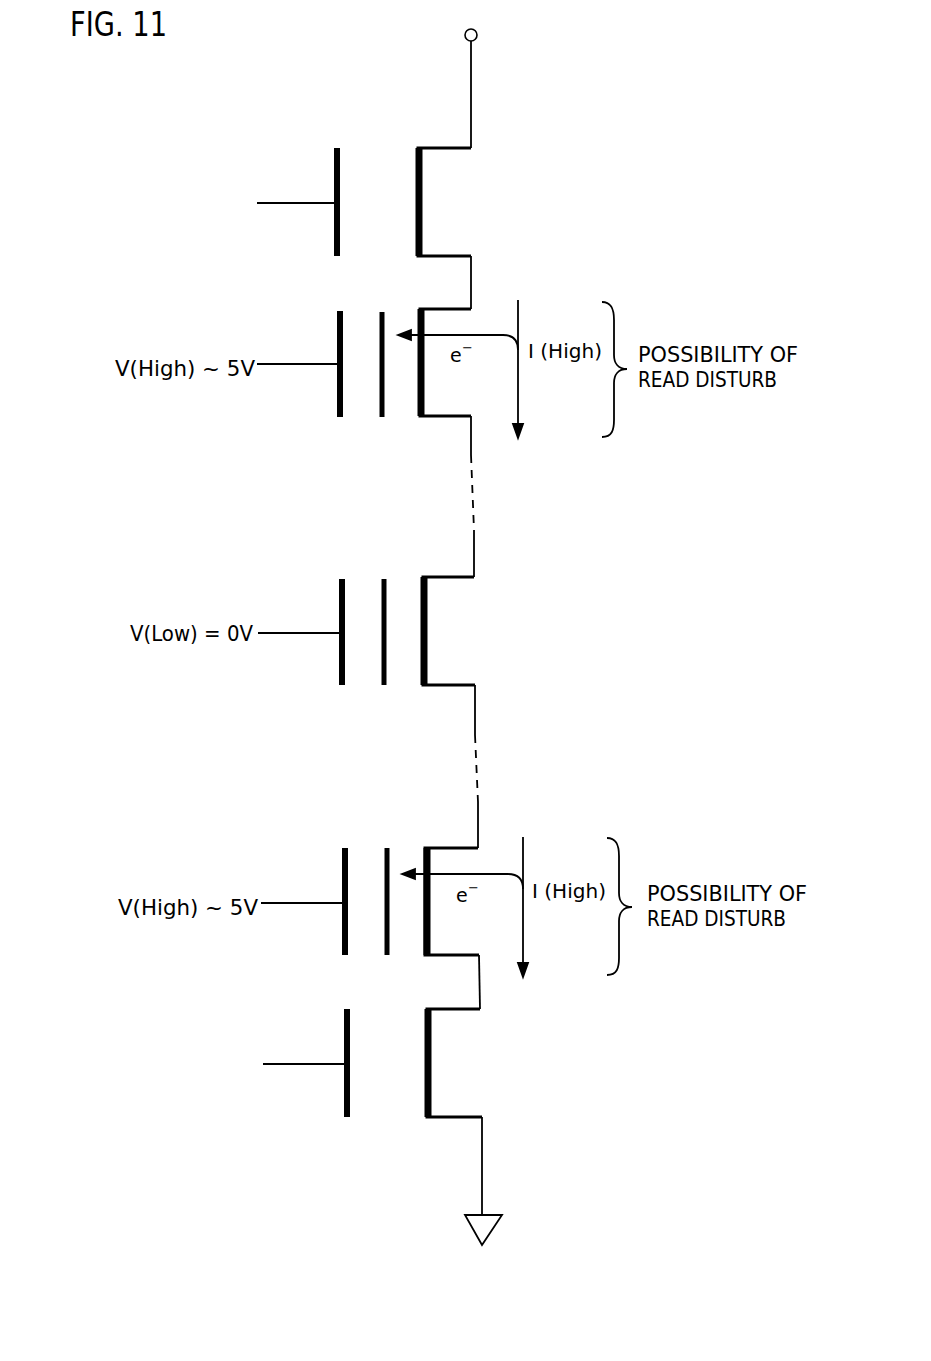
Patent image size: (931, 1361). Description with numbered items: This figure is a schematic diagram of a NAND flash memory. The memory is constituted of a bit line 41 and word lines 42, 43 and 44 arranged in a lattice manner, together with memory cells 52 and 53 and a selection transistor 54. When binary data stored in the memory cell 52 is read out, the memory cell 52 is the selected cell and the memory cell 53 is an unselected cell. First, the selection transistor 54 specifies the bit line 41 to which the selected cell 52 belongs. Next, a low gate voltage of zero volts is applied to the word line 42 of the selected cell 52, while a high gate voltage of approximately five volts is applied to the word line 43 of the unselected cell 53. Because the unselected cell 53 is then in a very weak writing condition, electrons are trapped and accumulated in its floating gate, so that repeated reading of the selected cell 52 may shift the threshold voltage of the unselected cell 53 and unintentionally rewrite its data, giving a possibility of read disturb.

The bit line 41 is at (471, 99).
The word line 42 is at (292, 633).
The word line 43 is at (292, 364).
The word line 44 is at (278, 203).
The memory cell 52 is at (339, 592).
The memory cell 53 is at (338, 325).
The selection transistor 54 is at (335, 167).